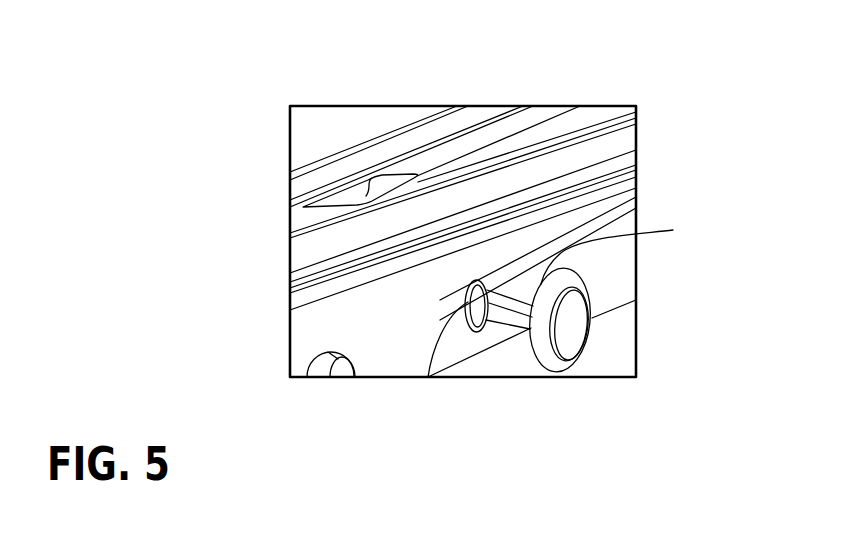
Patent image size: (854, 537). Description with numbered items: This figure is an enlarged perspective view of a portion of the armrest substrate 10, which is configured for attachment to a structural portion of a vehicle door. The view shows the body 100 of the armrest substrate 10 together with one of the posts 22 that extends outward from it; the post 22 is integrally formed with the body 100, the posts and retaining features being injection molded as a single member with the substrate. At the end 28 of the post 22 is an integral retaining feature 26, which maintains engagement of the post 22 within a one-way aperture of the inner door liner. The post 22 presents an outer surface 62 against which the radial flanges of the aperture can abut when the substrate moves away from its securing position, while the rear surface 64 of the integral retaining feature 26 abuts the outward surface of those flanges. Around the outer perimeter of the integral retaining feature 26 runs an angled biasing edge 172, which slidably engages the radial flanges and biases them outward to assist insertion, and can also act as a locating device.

The armrest substrate 10 is at (418, 80).
The body 100 is at (493, 142).
The outer surface 62 is at (428, 377).
The rear surface 64 is at (702, 237).
The post 22 is at (497, 337).
The angled biasing edge 172 is at (541, 347).
The integral retaining feature 26 is at (566, 348).
The end 28 is at (578, 312).